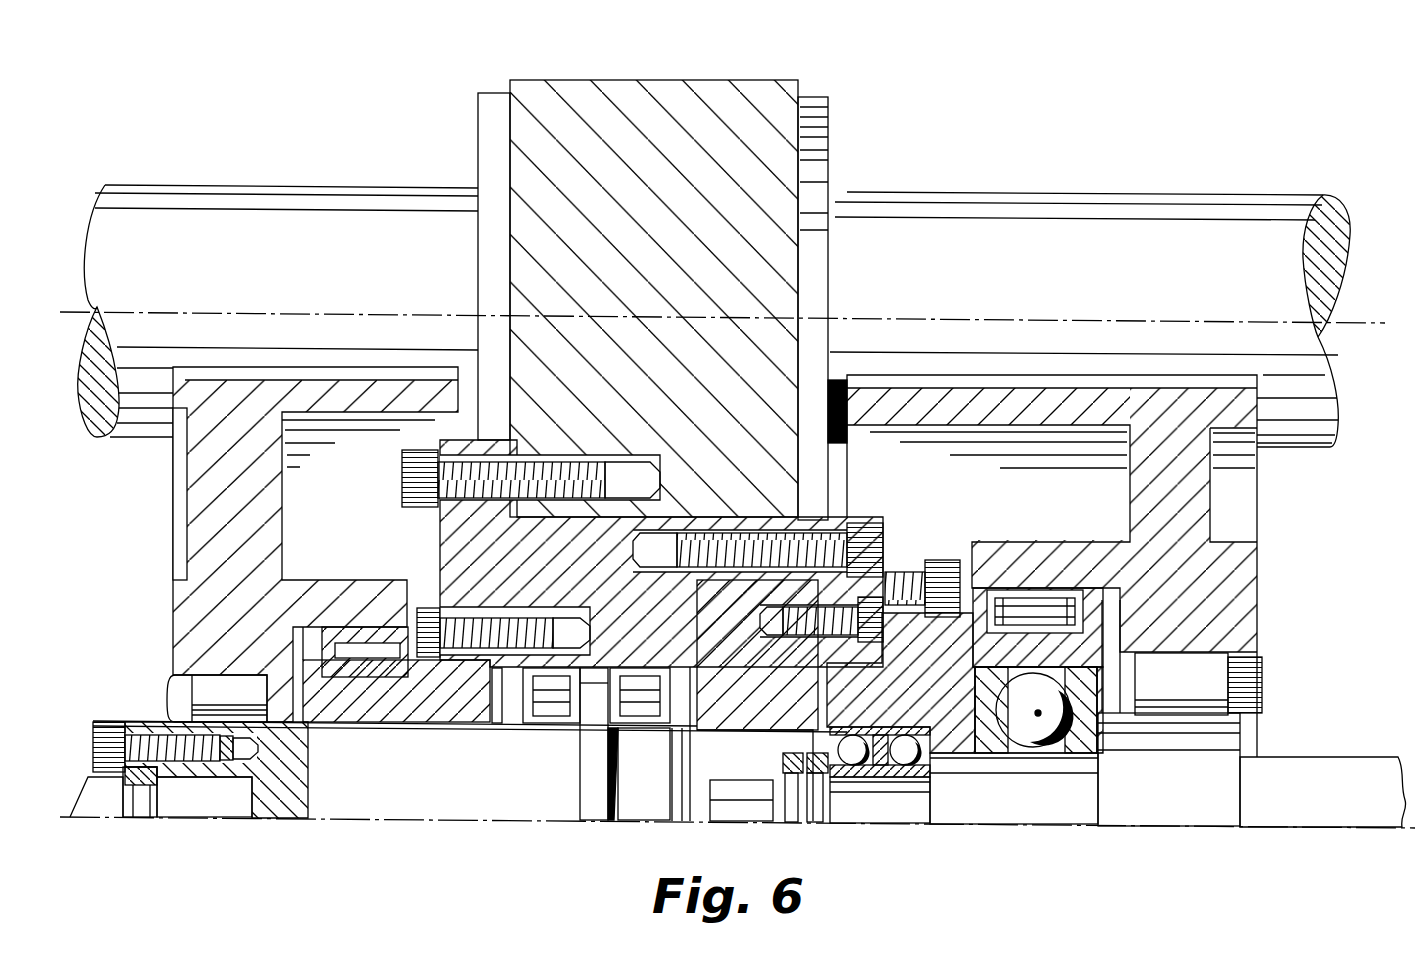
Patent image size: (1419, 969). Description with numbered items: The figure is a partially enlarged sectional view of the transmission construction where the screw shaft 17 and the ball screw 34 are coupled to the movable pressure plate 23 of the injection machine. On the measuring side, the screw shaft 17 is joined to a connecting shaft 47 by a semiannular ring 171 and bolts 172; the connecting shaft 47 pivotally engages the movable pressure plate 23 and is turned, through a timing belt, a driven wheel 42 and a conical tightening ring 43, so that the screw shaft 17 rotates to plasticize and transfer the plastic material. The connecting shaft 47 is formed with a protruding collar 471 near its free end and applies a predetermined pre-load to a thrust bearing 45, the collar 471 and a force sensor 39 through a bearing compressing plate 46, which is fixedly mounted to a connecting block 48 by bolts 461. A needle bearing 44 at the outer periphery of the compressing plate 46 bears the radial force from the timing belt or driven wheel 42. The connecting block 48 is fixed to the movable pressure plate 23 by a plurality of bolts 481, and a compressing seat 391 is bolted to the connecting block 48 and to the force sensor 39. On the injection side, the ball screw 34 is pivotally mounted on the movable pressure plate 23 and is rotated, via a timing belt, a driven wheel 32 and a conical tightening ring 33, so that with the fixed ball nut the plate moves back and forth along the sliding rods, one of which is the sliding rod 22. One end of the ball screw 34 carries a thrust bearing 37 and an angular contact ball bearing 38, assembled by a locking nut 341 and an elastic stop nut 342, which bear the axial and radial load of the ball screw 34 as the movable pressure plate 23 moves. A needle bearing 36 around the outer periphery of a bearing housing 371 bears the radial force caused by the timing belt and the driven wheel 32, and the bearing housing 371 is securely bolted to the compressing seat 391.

The screw shaft 17 is at (105, 806).
The semiannular ring 171 is at (145, 787).
The bolts 172 is at (138, 735).
The sliding rod 22 is at (192, 198).
The movable pressure plate 23 is at (633, 110).
The driven wheel 32 is at (1097, 400).
The conical tightening ring 33 is at (1210, 667).
The ball screw 34 is at (1310, 768).
The needle bearing 36 is at (1012, 603).
The thrust bearing 37 is at (1064, 739).
The bearing housing 371 is at (955, 730).
The angular contact ball bearing 38 is at (897, 775).
The force sensor 39 is at (732, 712).
The locking nut 341 is at (818, 770).
The elastic stop nut 342 is at (795, 770).
The compressing seat 391 is at (872, 755).
The driven wheel 42 is at (229, 388).
The conical tightening ring 43 is at (203, 677).
The needle bearing 44 is at (350, 640).
The thrust bearing 45 is at (537, 697).
The bearing compressing plate 46 is at (347, 705).
The bolts 461 is at (468, 625).
The connecting shaft 47 is at (268, 802).
The protruding collar 471 is at (590, 785).
The connecting block 48 is at (562, 587).
The bolts 481 is at (476, 476).